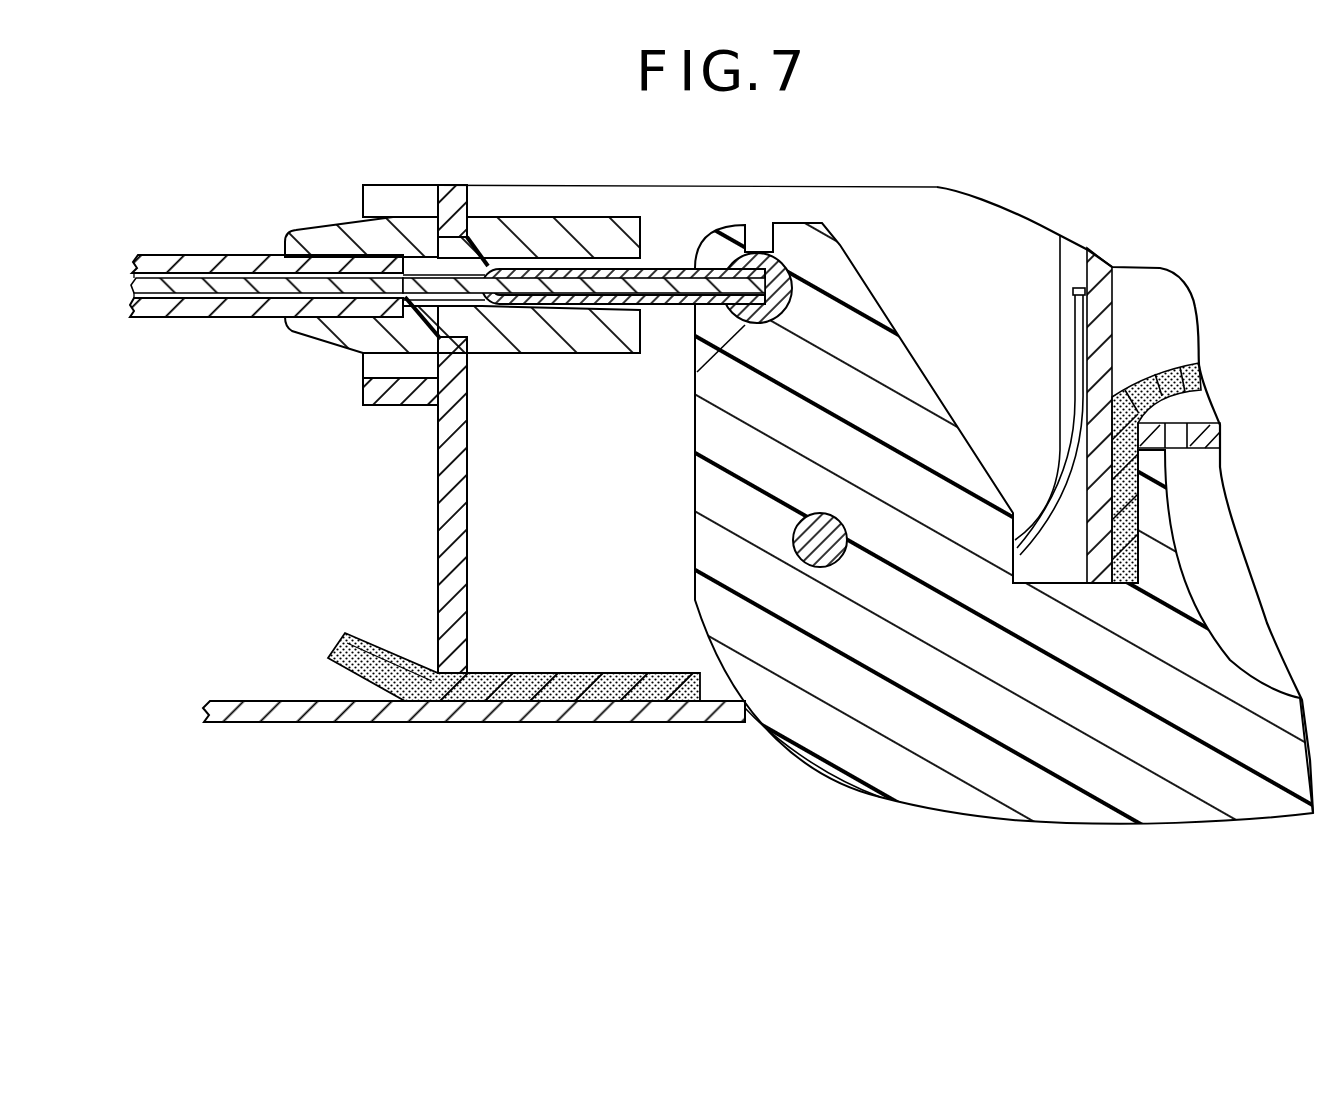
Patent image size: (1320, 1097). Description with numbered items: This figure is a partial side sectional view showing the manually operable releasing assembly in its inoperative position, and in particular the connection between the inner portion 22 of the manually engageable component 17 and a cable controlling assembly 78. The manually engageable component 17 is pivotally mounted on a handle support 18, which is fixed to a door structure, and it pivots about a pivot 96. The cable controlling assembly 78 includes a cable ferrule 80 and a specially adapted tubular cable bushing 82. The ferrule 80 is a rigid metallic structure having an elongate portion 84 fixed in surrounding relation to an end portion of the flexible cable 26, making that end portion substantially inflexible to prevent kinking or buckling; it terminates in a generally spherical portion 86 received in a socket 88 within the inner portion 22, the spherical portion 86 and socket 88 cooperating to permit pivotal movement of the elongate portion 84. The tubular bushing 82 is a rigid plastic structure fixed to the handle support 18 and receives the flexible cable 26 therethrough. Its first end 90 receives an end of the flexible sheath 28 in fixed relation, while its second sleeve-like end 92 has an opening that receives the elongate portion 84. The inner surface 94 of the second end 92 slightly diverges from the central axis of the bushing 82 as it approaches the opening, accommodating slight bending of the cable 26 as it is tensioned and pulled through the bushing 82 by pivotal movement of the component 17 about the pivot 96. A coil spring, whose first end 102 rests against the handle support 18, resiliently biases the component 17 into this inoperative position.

The manually engageable component 17 is at (1157, 826).
The handle support 18 is at (445, 556).
The inner portion 22 is at (840, 270).
The flexible cable 26 is at (188, 288).
The flexible sheath 28 is at (187, 215).
The cable controlling assembly 78 is at (687, 227).
The cable ferrule 80 is at (553, 300).
The tubular cable bushing 82 is at (317, 237).
The elongate portion 84 is at (580, 300).
The spherical portion 86 is at (742, 313).
The socket 88 is at (763, 272).
The first end 90 is at (333, 330).
The second sleeve-like end 92 is at (530, 227).
The inner surface 94 is at (612, 262).
The pivot 96 is at (808, 548).
The first end 102 is at (1077, 287).